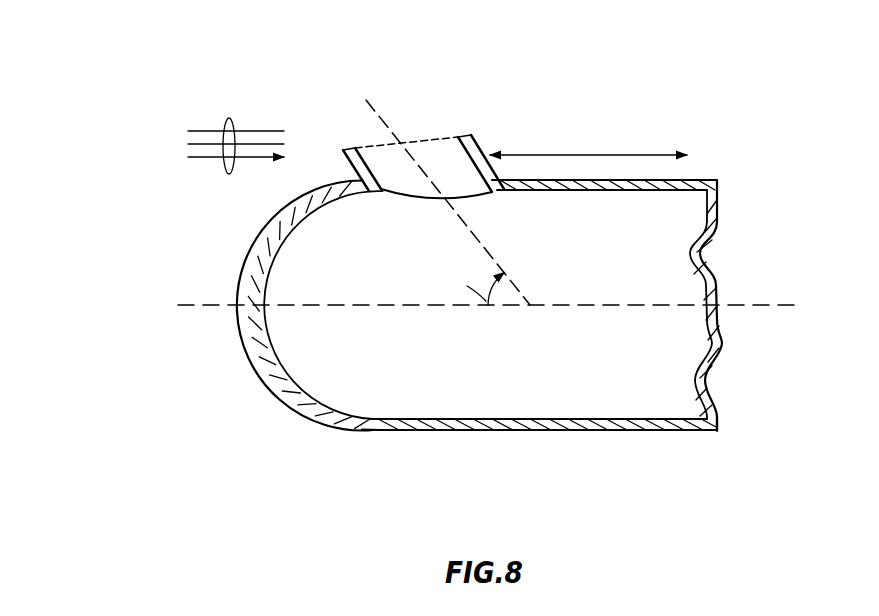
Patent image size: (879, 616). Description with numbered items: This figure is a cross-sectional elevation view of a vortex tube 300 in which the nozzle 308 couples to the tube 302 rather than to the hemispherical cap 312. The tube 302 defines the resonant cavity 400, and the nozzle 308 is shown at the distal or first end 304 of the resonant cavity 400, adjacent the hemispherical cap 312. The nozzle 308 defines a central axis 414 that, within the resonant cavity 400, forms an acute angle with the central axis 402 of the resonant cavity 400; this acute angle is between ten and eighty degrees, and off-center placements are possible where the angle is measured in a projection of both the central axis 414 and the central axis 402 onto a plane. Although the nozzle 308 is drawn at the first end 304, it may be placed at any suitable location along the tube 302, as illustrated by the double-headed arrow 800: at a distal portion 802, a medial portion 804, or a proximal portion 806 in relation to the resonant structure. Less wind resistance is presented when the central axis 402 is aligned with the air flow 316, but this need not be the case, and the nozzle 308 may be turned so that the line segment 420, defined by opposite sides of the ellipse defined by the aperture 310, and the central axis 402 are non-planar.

The vortex tube 300 is at (734, 101).
The tube 302 is at (689, 180).
The first end 304 is at (373, 438).
The nozzle 308 is at (483, 150).
The aperture 310 is at (413, 126).
The hemispherical cap 312 is at (277, 390).
The air flow 316 is at (229, 175).
The resonant cavity 400 is at (601, 236).
The central axis 402 is at (200, 306).
The central axis 414 is at (375, 109).
The line segment 420 is at (440, 137).
The double-headed arrow 800 is at (602, 153).
The distal portion 802 is at (362, 438).
The medial portion 804 is at (527, 438).
The proximal portion 806 is at (708, 436).